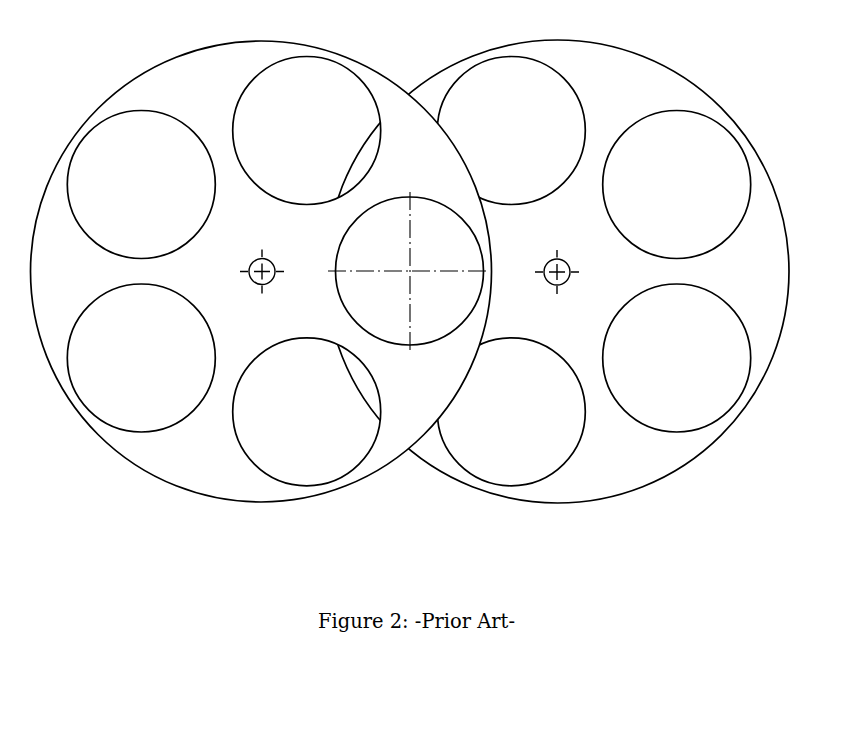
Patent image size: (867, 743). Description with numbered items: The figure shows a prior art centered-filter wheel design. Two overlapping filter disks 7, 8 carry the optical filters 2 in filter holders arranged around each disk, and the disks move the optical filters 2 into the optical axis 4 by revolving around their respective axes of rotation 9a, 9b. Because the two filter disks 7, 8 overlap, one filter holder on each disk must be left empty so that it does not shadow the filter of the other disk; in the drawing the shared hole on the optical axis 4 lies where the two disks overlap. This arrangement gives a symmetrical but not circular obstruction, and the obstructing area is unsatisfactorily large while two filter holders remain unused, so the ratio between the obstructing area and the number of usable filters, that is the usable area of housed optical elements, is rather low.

The filter disk 7 is at (175, 96).
The filter disk 8 is at (655, 90).
The optical filter 2 is at (137, 181).
The optical axis 4 is at (410, 271).
The axis of rotation 9a is at (262, 271).
The axis of rotation 9b is at (557, 272).